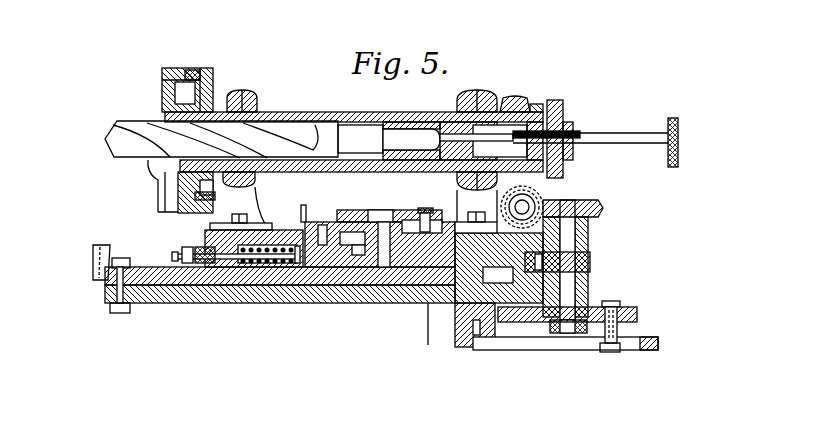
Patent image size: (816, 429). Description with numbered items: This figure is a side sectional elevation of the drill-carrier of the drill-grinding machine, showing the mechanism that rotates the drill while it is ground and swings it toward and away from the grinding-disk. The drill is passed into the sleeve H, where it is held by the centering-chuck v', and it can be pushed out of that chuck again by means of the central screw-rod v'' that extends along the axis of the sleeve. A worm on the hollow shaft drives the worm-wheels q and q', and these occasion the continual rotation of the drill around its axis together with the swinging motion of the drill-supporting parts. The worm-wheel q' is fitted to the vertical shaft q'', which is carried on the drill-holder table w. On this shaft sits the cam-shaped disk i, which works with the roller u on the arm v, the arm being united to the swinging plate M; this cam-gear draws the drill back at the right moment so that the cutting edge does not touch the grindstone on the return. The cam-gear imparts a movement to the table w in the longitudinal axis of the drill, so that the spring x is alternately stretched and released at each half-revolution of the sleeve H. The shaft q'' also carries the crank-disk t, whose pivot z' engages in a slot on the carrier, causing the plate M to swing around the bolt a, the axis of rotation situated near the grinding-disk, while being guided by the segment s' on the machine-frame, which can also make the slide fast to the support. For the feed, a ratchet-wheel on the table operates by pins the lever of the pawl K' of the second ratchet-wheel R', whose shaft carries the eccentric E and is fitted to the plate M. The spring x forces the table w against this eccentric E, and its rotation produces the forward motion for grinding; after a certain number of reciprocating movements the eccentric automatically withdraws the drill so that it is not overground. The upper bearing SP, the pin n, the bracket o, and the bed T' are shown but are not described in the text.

The spindle bearing SP is at (196, 64).
The sleeve H is at (279, 117).
The centering-chuck v' is at (448, 117).
The worm-wheel q is at (536, 127).
The central screw-rod v'' is at (595, 136).
The roller o is at (541, 199).
The worm-wheel q' is at (588, 207).
The vertical shaft q'' is at (581, 266).
The cam-shaped disk i is at (520, 255).
The drill-holder table w is at (253, 236).
The pin n is at (309, 222).
The pawl K' is at (389, 221).
The second ratchet-wheel R' is at (422, 209).
The arm v is at (465, 217).
The swinging plate M is at (137, 267).
The bolt a is at (117, 292).
The bed T' is at (280, 315).
The spring x is at (270, 267).
The eccentric E is at (378, 255).
The segment s' is at (489, 319).
The roller u is at (532, 277).
The pivot z' is at (616, 314).
The crank-disk t is at (637, 311).